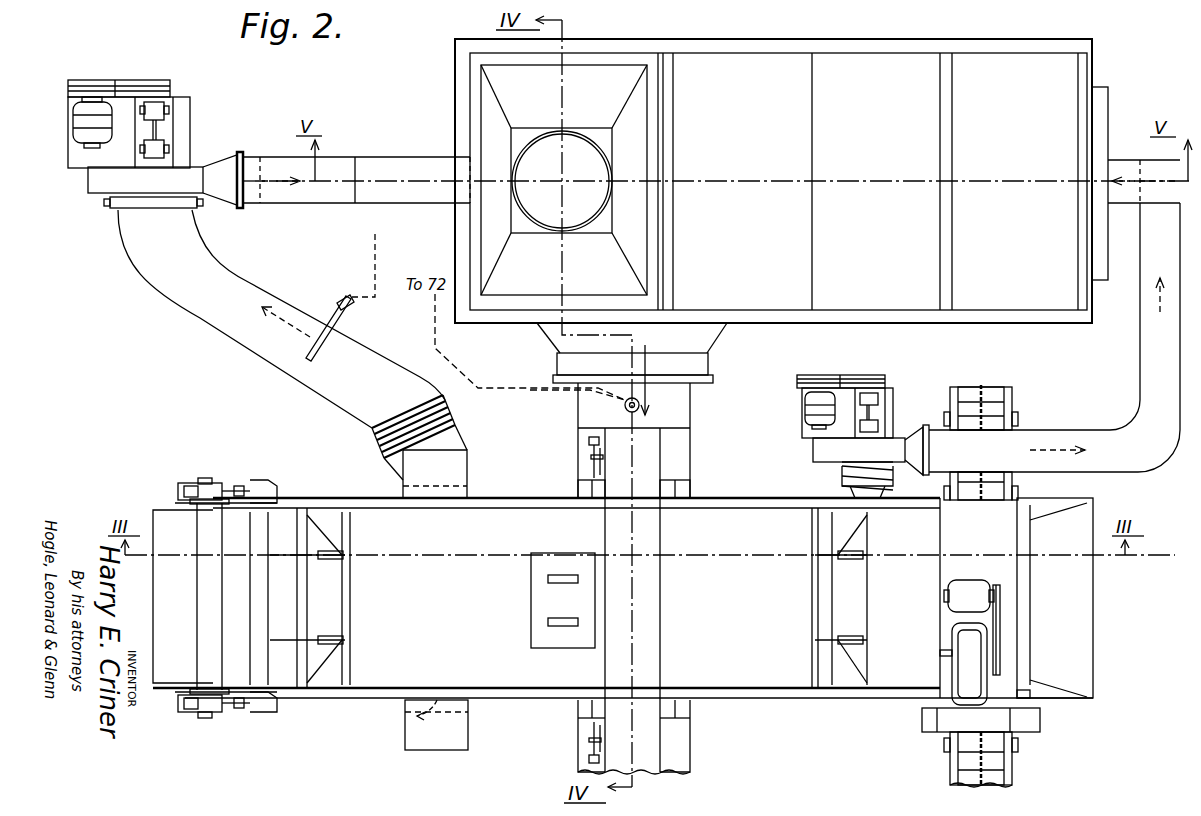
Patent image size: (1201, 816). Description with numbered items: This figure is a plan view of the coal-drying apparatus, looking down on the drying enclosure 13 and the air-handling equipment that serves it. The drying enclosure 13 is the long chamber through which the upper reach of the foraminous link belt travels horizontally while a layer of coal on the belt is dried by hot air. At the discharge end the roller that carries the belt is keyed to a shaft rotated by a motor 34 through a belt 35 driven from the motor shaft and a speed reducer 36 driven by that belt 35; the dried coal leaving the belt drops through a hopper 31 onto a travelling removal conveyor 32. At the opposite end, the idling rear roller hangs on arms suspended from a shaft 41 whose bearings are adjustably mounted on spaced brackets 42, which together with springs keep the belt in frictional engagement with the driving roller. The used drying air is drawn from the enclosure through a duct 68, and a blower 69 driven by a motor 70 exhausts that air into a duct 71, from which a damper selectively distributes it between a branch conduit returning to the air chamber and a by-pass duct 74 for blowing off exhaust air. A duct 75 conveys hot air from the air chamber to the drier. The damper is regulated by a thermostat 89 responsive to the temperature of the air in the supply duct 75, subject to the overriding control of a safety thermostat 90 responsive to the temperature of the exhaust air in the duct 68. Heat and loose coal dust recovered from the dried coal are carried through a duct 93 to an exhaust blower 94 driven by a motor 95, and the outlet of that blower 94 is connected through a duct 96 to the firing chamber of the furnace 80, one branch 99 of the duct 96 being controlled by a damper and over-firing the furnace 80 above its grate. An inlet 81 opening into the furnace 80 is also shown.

The drying enclosure 13 is at (483, 522).
The hopper 31 is at (1060, 652).
The travelling removal conveyor 32 is at (1000, 402).
The motor 34 is at (966, 584).
The belt 35 is at (1000, 618).
The speed reducer 36 is at (968, 660).
The shaft 41 is at (205, 633).
The brackets 42 is at (272, 492).
The duct 68 is at (258, 335).
The blower 69 is at (107, 185).
The motor 70 is at (88, 117).
The duct 71 is at (318, 200).
The by-pass duct 74 is at (378, 163).
The duct 75 is at (598, 403).
The furnace 80 is at (846, 68).
The inlet opening 81 is at (513, 192).
The thermostat 89 is at (625, 410).
The thermostat 90 is at (346, 298).
The duct 93 is at (845, 479).
The exhaust blower 94 is at (878, 412).
The motor 95 is at (808, 408).
The duct 96 is at (1154, 442).
The branch 99 is at (1130, 172).